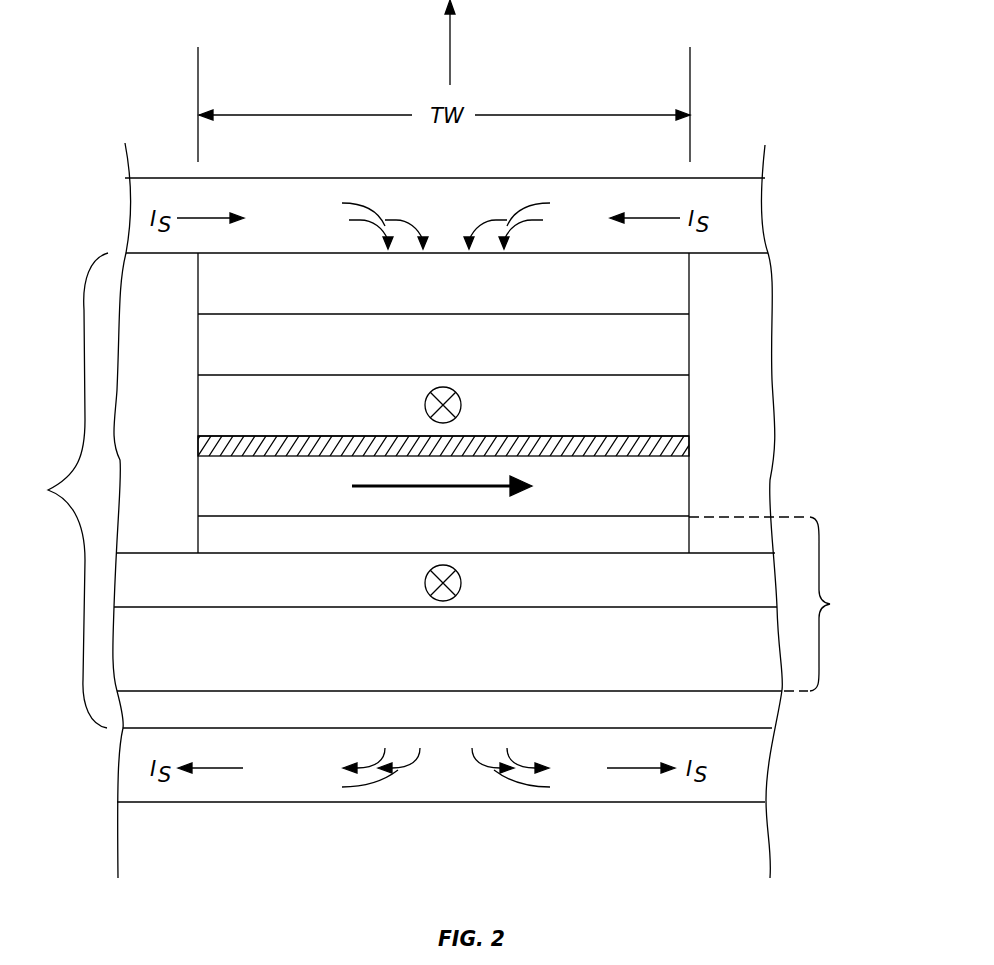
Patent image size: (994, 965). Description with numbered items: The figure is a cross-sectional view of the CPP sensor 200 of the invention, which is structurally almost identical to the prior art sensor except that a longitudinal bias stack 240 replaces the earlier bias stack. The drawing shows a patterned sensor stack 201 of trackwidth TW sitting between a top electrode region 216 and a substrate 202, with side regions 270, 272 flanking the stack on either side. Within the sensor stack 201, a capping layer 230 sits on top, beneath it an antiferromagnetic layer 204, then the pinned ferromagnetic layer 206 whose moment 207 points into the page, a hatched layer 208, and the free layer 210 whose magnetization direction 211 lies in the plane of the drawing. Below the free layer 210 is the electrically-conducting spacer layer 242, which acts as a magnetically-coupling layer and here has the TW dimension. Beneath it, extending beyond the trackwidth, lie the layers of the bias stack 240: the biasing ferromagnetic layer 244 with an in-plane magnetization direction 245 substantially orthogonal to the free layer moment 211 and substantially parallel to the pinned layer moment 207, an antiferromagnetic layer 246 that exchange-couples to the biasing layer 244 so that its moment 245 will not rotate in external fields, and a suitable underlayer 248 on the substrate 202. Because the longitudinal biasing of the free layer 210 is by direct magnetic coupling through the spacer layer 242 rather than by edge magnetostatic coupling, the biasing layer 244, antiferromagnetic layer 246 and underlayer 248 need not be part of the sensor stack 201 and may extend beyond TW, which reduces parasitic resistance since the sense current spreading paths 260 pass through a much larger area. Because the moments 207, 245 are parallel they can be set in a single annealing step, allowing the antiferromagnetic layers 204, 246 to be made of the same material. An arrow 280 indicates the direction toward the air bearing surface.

The CPP sensor 200 is at (163, 125).
The sensor stack 201 is at (56, 490).
The substrate 202 is at (717, 762).
The antiferromagnetic layer 204 is at (642, 357).
The pinned ferromagnetic layer 206 is at (642, 417).
The magnetization direction of pinned layer 207 is at (461, 401).
The free layer 208 is at (200, 446).
The free layer 210 is at (642, 497).
The magnetization direction of free layer 211 is at (360, 484).
The upper shield / lead layer 216 is at (715, 204).
The capping layer 230 is at (642, 297).
The longitudinal bias stack 240 is at (784, 604).
The spacer layer 242 is at (642, 547).
The biasing ferromagnetic layer 244 is at (642, 594).
The magnetization direction of biasing layer 245 is at (461, 579).
The antiferromagnetic layer 246 is at (642, 655).
The underlayer 248 is at (642, 722).
The sense current spreading paths 260 is at (445, 496).
The left insulating region 270 is at (142, 357).
The right insulating region 272 is at (709, 357).
The direction to air bearing surface 280 is at (452, 45).